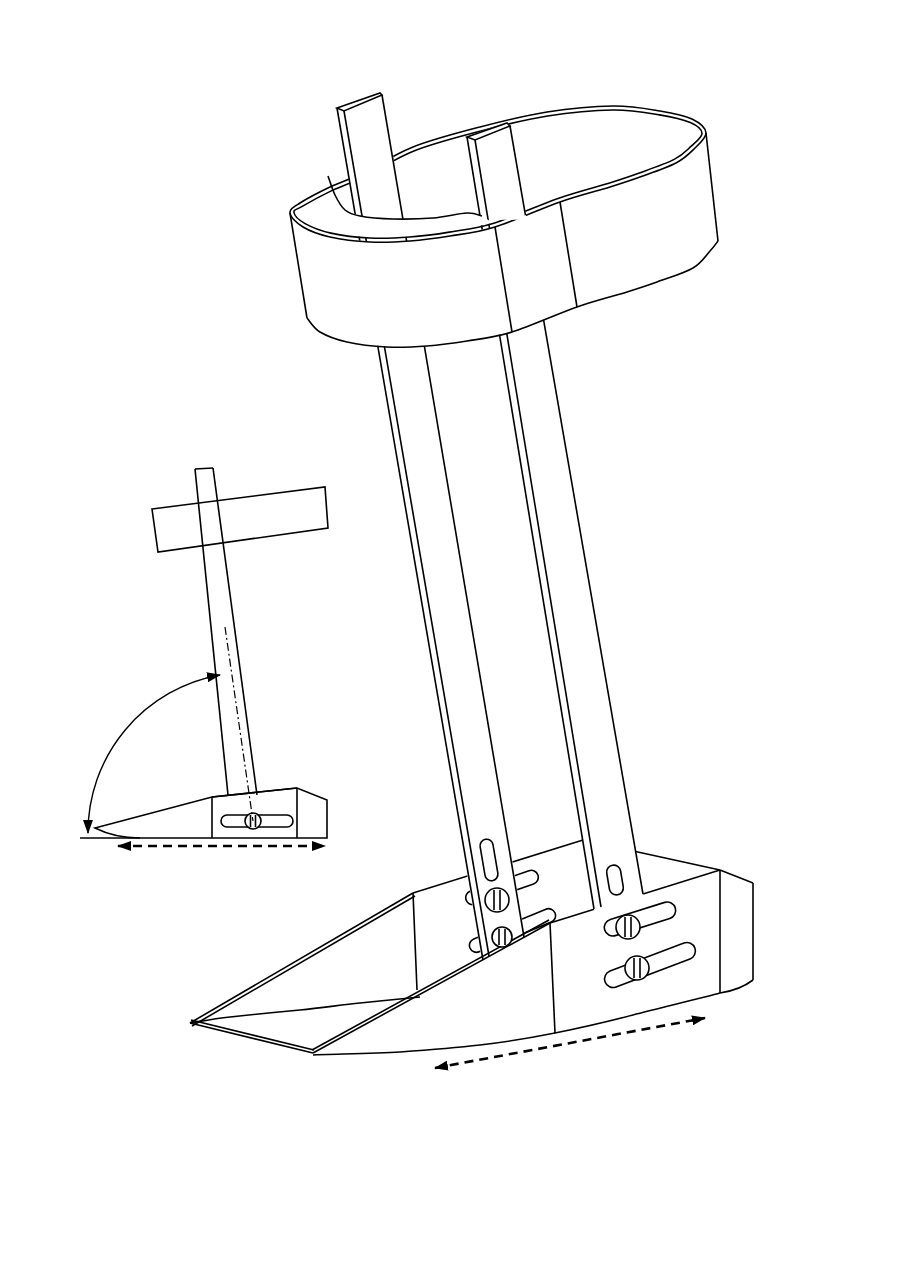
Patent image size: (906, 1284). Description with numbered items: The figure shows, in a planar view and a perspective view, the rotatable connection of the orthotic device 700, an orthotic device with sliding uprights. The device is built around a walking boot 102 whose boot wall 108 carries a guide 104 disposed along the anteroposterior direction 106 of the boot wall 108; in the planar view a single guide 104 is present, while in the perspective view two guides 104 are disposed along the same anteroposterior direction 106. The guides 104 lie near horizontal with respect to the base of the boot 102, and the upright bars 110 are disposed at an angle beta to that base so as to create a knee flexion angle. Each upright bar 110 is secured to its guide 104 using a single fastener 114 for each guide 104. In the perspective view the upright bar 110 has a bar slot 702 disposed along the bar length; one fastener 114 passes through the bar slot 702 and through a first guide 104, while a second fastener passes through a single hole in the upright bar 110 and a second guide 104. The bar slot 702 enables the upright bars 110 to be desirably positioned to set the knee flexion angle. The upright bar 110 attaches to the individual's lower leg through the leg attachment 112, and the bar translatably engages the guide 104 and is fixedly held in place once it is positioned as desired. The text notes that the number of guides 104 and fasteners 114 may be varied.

The orthotic device 700 is at (85, 85).
The walking boot 102 is at (103, 870).
The guide 104 is at (280, 815).
The anteroposterior direction 106 is at (215, 848).
The boot wall 108 is at (222, 793).
The upright bar 110 is at (390, 408).
The leg attachment 112 is at (708, 202).
The fastener 114 is at (253, 815).
The bar slot 702 is at (622, 857).